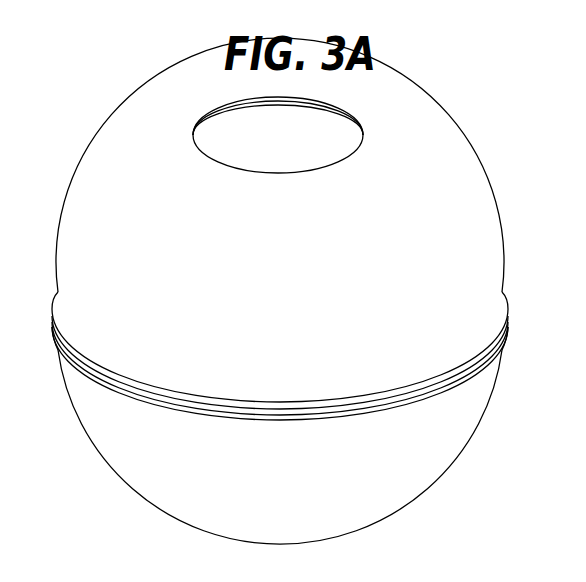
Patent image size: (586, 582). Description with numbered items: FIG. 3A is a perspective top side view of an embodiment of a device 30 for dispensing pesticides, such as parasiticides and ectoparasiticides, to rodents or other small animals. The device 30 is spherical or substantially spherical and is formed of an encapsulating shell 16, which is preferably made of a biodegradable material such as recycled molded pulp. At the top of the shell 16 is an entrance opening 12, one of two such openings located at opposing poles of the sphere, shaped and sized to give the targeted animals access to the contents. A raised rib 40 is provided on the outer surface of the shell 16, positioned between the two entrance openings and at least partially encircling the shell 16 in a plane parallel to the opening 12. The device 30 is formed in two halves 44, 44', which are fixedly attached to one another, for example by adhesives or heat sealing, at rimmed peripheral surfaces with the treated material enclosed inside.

The device 30 is at (50, 160).
The shell 16 is at (430, 188).
The half 44 is at (310, 165).
The other half 44' is at (307, 447).
The raised rib 40 is at (506, 330).
The entrance opening 12 is at (212, 146).